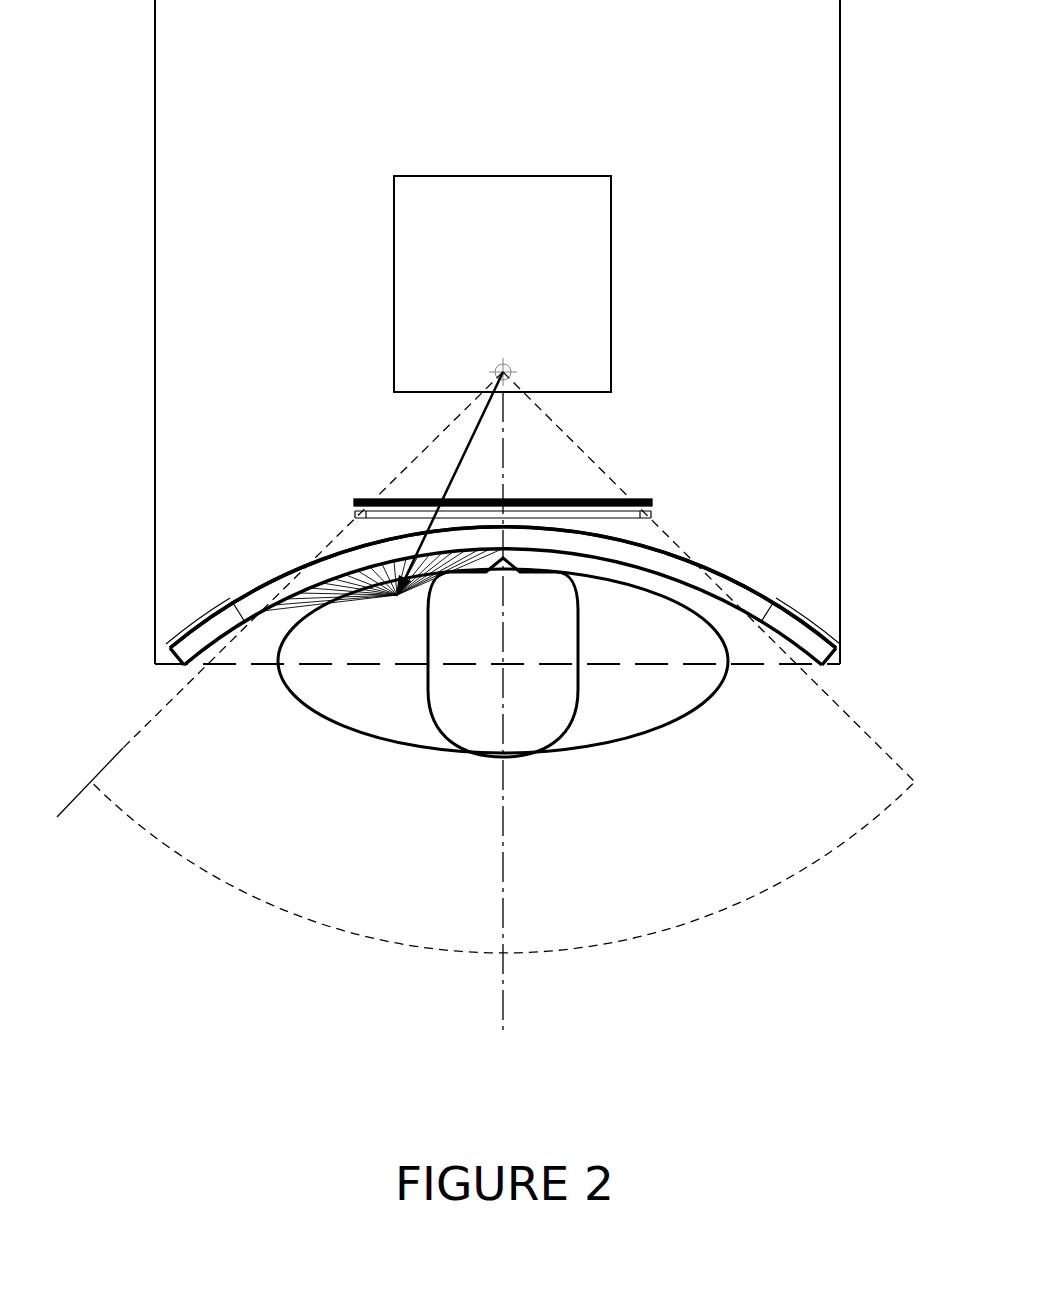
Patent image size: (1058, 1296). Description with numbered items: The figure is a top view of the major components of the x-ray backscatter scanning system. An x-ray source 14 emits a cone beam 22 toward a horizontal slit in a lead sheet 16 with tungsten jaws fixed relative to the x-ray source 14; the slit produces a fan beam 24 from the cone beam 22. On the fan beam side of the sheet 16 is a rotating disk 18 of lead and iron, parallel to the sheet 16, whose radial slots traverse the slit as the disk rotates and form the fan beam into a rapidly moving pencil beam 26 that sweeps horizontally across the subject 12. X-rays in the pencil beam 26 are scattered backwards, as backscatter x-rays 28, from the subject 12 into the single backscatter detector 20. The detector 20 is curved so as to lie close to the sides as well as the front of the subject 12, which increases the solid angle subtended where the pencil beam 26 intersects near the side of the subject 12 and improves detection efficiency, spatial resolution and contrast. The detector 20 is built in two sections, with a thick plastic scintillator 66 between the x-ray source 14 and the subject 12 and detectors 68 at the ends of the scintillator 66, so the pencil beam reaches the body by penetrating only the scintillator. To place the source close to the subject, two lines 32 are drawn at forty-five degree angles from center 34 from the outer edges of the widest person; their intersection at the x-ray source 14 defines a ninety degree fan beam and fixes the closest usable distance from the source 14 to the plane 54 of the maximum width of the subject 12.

The subject 12 is at (640, 715).
The x-ray source 14 is at (503, 372).
The lead sheet 16 is at (648, 497).
The rotating disk 18 is at (352, 515).
The backscatter detector 20 is at (770, 578).
The cone beam 22 is at (577, 467).
The fan beam 24 is at (650, 509).
The pencil beam 26 is at (416, 555).
The backscatter x-rays 28 is at (280, 613).
The lines 32 is at (127, 743).
The center 34 is at (503, 923).
The plane of maximum width 54 is at (740, 667).
The scintillator 66 is at (277, 567).
The detectors 68 is at (177, 637).